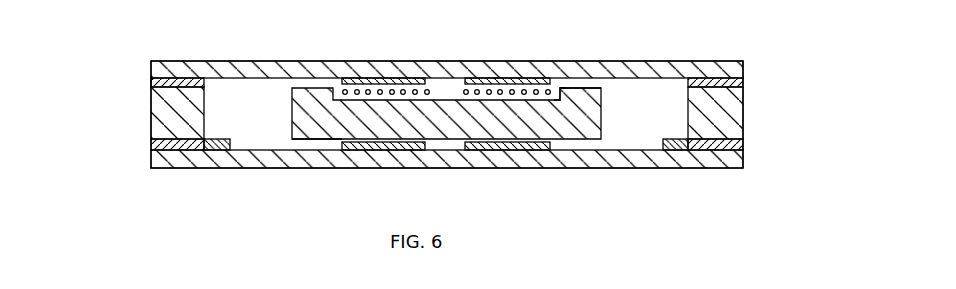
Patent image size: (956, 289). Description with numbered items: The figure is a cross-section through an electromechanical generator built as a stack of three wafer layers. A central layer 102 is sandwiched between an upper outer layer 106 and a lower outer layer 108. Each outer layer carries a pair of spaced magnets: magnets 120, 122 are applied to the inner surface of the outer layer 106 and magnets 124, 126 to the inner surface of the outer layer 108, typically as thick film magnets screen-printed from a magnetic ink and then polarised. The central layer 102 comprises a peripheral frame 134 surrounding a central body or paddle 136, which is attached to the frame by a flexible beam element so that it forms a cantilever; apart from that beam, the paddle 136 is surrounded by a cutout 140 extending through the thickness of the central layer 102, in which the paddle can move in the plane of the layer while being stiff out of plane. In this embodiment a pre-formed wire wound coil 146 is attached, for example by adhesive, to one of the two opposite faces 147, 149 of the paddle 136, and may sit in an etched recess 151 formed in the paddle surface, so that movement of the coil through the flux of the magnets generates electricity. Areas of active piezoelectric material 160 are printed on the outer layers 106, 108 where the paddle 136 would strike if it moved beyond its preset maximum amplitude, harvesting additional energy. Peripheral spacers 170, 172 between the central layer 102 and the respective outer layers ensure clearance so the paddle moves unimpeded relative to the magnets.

The central layer 102 is at (743, 118).
The outer layer 106 is at (272, 61).
The outer layer 108 is at (178, 168).
The magnet 120 is at (405, 90).
The magnet 122 is at (485, 90).
The magnet 124 is at (363, 150).
The magnet 126 is at (528, 150).
The peripheral frame 134 is at (172, 82).
The paddle 136 is at (578, 87).
The cutout 140 is at (231, 87).
The wire coil 146 is at (364, 84).
The face of the paddle 147 is at (311, 88).
The face of the paddle 149 is at (309, 142).
The etched recess 151 is at (556, 88).
The active piezoelectric material 160 is at (220, 139).
The peripheral spacer 170 is at (151, 82).
The peripheral spacer 172 is at (151, 145).